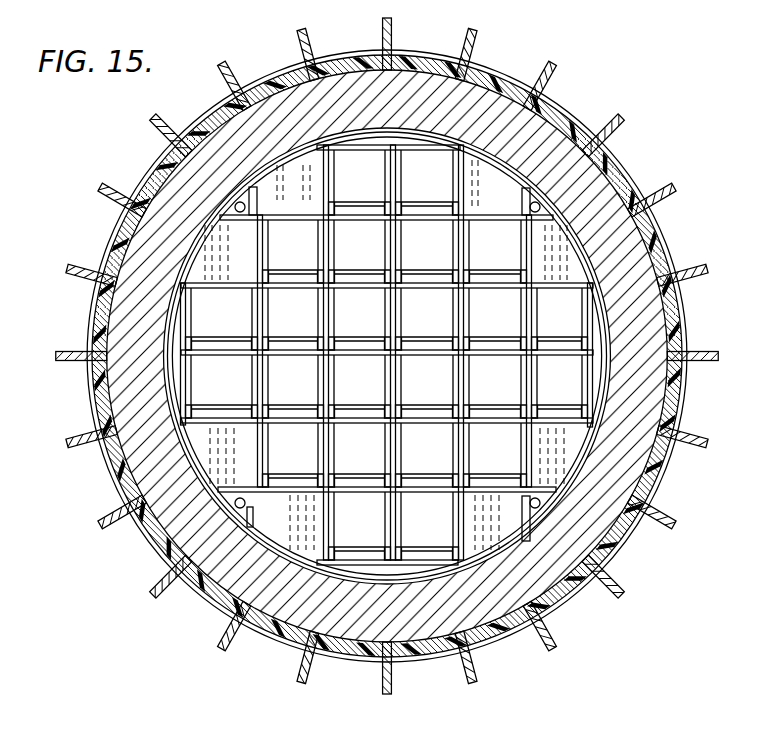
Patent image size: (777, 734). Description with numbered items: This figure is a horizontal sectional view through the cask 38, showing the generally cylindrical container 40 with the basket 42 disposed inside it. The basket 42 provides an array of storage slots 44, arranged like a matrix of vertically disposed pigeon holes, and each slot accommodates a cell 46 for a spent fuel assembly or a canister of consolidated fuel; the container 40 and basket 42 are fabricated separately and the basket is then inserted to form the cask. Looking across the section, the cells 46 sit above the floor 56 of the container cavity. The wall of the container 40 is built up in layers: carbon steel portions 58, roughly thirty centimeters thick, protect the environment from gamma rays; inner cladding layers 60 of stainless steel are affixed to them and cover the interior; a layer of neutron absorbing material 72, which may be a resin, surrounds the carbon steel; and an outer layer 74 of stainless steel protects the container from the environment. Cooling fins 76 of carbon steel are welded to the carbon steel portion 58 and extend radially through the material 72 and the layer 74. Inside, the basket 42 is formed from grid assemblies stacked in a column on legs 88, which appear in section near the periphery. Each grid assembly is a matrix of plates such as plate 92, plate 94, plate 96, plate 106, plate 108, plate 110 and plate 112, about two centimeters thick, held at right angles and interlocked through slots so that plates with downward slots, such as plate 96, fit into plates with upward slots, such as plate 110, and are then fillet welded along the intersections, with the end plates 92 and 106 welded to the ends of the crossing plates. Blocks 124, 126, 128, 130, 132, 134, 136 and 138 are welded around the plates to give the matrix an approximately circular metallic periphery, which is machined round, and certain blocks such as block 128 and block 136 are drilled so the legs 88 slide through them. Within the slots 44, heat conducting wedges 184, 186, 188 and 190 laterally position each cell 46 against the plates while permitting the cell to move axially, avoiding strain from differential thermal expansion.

The cask 38 is at (667, 105).
The container 40 is at (636, 174).
The basket 42 is at (573, 282).
The storage slots 44 is at (567, 327).
The cell 46 is at (490, 342).
The floor 56 is at (350, 391).
The carbon steel portions 58 is at (105, 462).
The inner cladding layers 60 is at (197, 482).
The neutron absorbing material 72 is at (90, 397).
The outer layer 74 is at (90, 310).
The cooling fins 76 is at (102, 197).
The legs 88 is at (530, 206).
The plate 92 is at (435, 153).
The plate 94 is at (442, 218).
The plate 96 is at (440, 290).
The plate 106 is at (188, 333).
The plate 108 is at (248, 313).
The plate 110 is at (317, 307).
The plate 112 is at (383, 323).
The block 124 is at (187, 373).
The block 126 is at (233, 437).
The block 128 is at (246, 528).
The block 130 is at (307, 551).
The block 132 is at (405, 568).
The block 134 is at (477, 548).
The block 136 is at (547, 507).
The block 138 is at (574, 457).
The wedge 184 is at (258, 443).
The wedge 186 is at (267, 461).
The wedge 188 is at (480, 475).
The wedge 190 is at (508, 482).